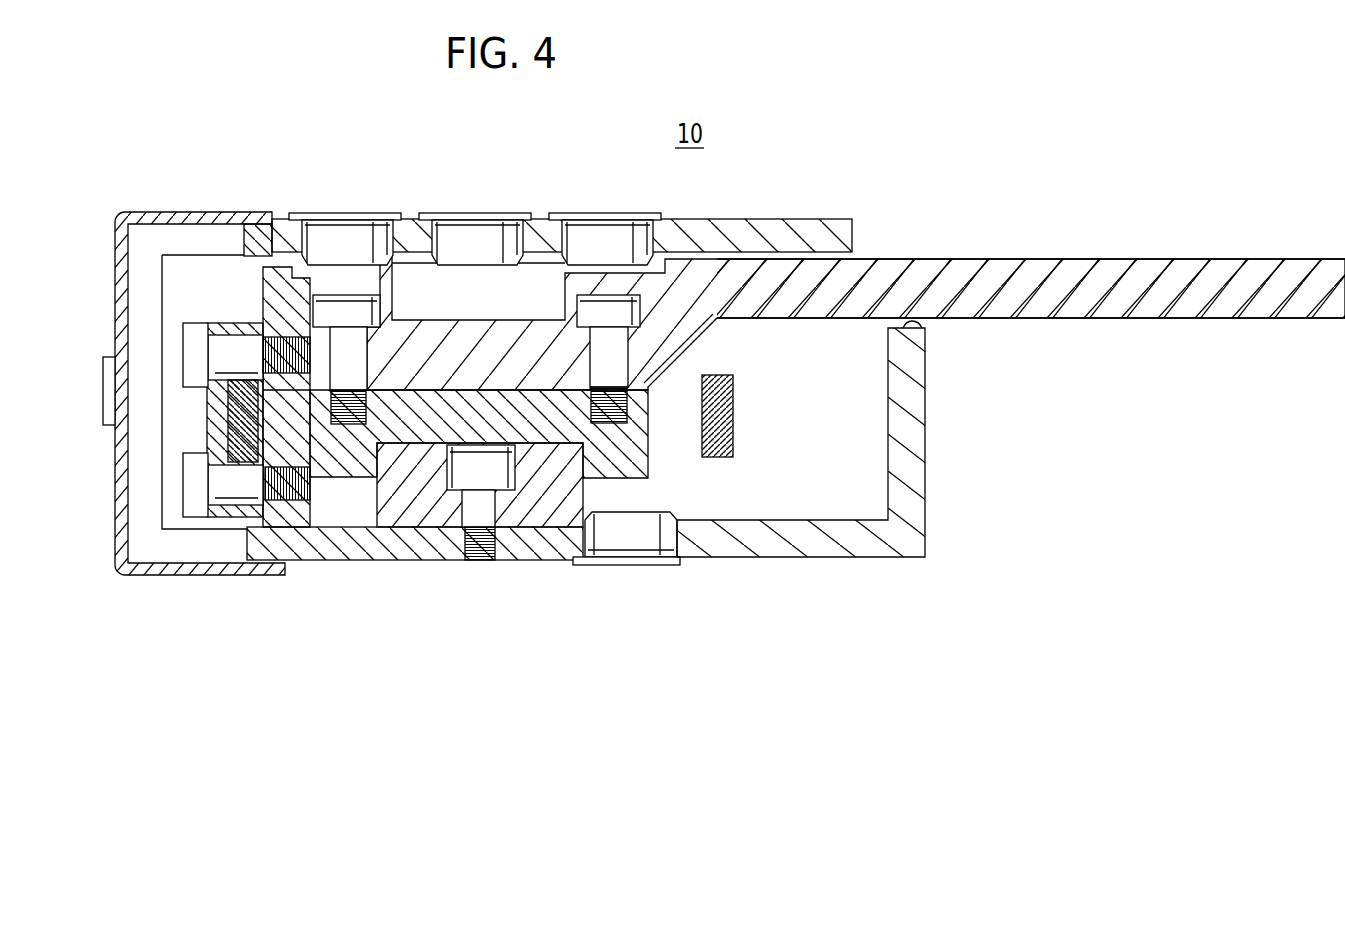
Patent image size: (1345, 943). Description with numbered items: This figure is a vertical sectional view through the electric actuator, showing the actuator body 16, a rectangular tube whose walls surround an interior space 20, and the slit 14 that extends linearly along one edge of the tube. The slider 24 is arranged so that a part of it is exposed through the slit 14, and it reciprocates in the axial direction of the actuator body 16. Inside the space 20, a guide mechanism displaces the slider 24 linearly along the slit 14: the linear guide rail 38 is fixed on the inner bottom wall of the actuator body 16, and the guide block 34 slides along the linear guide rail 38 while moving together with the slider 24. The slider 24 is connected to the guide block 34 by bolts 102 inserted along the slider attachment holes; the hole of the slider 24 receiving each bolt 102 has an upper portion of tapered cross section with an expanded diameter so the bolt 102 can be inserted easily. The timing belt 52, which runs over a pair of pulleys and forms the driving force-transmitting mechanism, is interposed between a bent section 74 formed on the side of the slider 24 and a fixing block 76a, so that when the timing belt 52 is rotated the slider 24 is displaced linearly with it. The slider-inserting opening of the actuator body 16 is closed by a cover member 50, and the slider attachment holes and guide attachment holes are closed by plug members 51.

The slit 14 is at (920, 326).
The actuator body 16 is at (720, 217).
The space 20 is at (723, 495).
The slider 24 is at (1100, 272).
The guide block 34 is at (545, 425).
The linear guide rail 38 is at (420, 493).
The cover member 50 is at (120, 298).
The plug member 51 is at (343, 237).
The timing belt 52 is at (243, 445).
The bent section 74 is at (286, 437).
The fixing block 76a is at (228, 440).
The bolt 102 is at (330, 310).